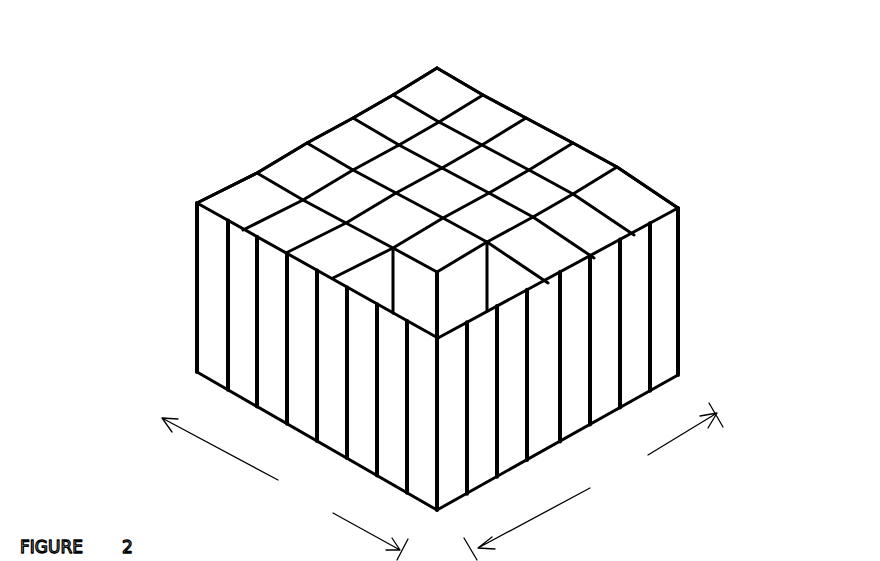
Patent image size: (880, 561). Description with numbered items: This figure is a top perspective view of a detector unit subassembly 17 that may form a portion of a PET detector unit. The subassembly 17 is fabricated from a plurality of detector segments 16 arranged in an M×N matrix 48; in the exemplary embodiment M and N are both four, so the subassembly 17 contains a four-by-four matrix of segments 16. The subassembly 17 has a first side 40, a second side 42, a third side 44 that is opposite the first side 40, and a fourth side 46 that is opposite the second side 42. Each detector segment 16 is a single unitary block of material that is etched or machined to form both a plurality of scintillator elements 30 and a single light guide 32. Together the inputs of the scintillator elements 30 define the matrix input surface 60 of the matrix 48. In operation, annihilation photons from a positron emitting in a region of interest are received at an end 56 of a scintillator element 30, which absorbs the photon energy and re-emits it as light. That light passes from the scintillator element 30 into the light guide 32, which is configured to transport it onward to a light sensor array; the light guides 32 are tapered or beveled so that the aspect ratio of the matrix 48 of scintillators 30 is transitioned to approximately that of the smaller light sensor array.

The detector unit subassembly 17 is at (762, 61).
The detector segment 16 is at (433, 218).
The light guide 32 is at (333, 133).
The first side 40 is at (304, 114).
The second side 42 is at (652, 114).
The M×N matrix 48 is at (737, 294).
The scintillator element 30 is at (240, 371).
The end of the scintillator element 56 is at (573, 434).
The matrix input surface 60 is at (452, 505).
The third side 44 is at (605, 525).
The fourth side 46 is at (283, 502).